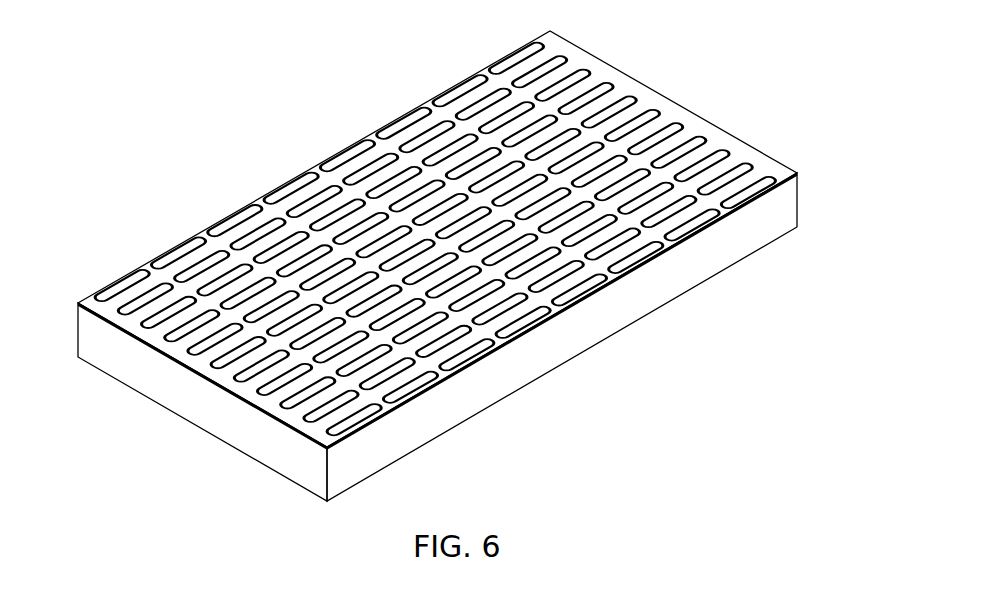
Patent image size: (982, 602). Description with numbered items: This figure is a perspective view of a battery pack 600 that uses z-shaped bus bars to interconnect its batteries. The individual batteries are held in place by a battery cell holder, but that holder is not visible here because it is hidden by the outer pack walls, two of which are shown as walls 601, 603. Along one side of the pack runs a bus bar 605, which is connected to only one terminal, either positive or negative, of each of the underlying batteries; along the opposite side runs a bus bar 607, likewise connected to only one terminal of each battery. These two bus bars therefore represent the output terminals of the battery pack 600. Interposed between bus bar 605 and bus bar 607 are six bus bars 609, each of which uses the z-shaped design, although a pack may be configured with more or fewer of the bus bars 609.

The battery pack 600 is at (263, 118).
The wall 601 is at (210, 411).
The wall 603 is at (588, 343).
The bus bar 605 is at (142, 334).
The bus bar 607 is at (610, 75).
The bus bars 609 is at (452, 89).